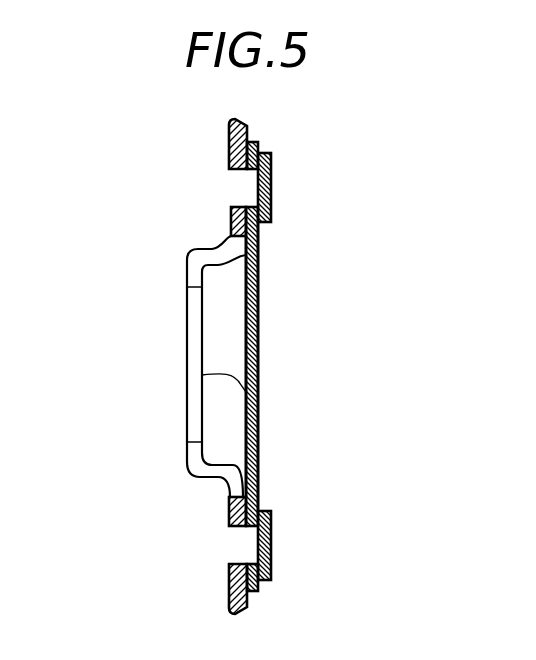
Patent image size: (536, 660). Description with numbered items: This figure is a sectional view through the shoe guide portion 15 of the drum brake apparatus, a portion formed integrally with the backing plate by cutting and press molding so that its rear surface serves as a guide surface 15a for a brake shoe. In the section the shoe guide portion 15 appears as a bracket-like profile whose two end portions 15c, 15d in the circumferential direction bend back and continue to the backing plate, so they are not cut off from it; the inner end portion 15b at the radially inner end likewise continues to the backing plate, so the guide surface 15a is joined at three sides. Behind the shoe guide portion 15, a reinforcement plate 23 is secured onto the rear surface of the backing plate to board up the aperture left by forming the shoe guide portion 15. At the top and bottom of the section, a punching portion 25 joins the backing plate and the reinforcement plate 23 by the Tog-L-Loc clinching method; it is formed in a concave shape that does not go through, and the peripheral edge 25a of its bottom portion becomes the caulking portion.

The shoe guide portion 15 is at (176, 377).
The guide surface 15a is at (258, 394).
The inner end portion 15b is at (228, 347).
The end portion 15c is at (215, 248).
The end portion 15d is at (205, 484).
The reinforcement plate 23 is at (260, 293).
The punching portion 25 is at (257, 183).
The peripheral edge 25a is at (261, 153).